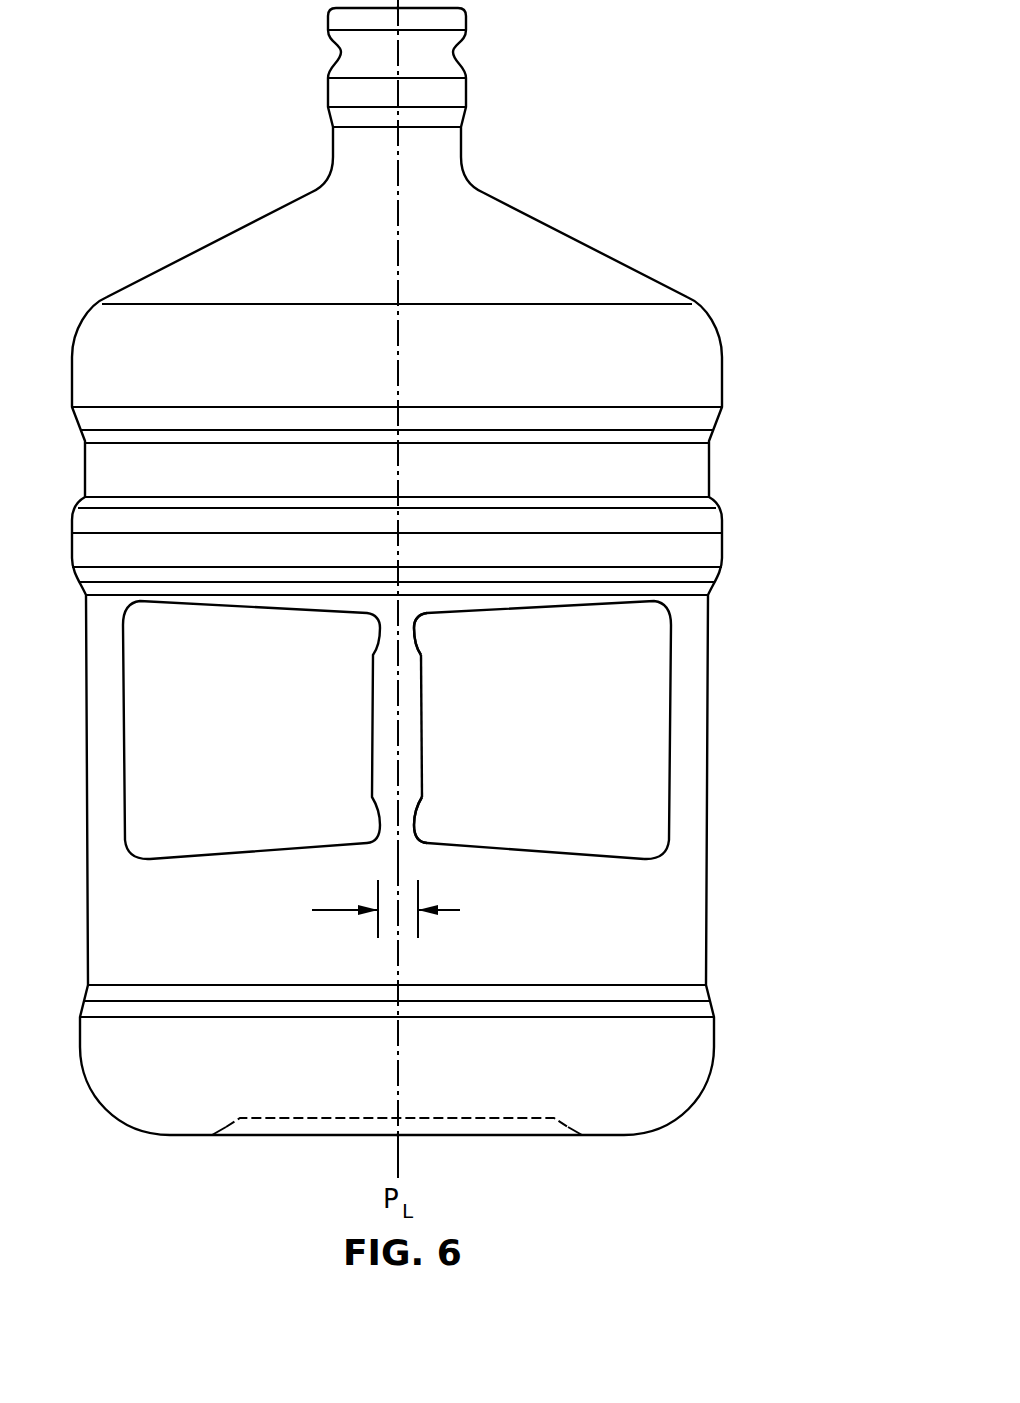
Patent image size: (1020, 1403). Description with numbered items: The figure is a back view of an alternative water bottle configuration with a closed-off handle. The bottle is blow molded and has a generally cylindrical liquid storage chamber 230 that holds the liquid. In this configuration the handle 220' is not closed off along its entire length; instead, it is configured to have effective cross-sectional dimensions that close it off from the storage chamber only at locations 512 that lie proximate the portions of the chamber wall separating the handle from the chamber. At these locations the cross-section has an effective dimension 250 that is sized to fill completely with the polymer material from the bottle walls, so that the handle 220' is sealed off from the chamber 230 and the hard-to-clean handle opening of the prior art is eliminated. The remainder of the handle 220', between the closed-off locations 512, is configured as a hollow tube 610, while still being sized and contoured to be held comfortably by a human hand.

The liquid storage chamber 230 is at (672, 922).
The hollow tube 610 is at (422, 708).
The handle 220' is at (542, 730).
The locations 512 is at (413, 628).
The effective dimension 250 is at (460, 910).